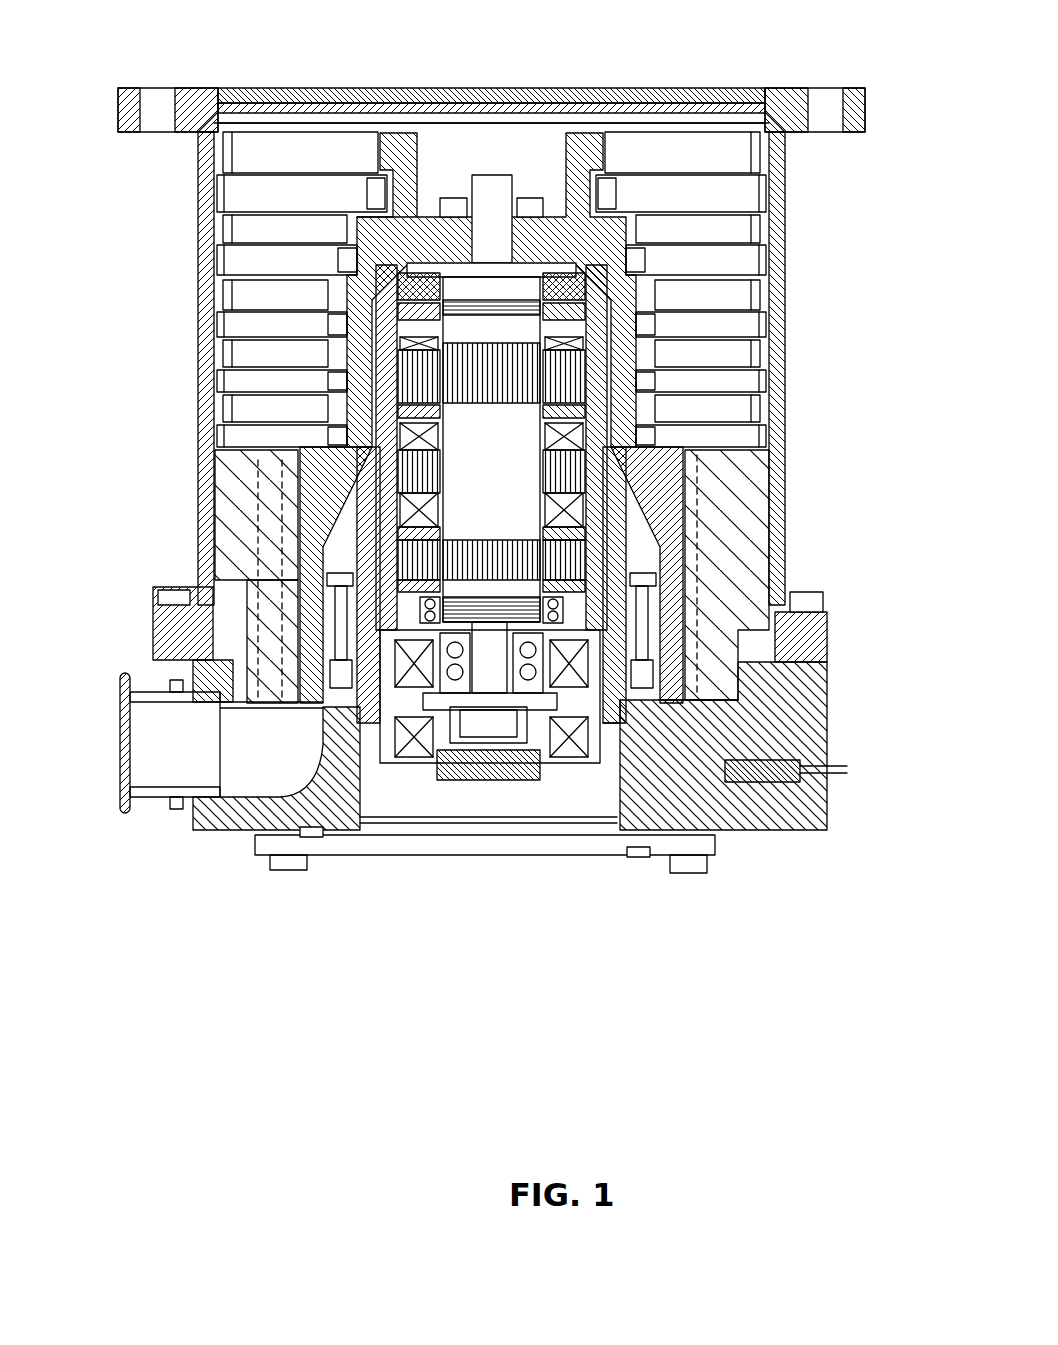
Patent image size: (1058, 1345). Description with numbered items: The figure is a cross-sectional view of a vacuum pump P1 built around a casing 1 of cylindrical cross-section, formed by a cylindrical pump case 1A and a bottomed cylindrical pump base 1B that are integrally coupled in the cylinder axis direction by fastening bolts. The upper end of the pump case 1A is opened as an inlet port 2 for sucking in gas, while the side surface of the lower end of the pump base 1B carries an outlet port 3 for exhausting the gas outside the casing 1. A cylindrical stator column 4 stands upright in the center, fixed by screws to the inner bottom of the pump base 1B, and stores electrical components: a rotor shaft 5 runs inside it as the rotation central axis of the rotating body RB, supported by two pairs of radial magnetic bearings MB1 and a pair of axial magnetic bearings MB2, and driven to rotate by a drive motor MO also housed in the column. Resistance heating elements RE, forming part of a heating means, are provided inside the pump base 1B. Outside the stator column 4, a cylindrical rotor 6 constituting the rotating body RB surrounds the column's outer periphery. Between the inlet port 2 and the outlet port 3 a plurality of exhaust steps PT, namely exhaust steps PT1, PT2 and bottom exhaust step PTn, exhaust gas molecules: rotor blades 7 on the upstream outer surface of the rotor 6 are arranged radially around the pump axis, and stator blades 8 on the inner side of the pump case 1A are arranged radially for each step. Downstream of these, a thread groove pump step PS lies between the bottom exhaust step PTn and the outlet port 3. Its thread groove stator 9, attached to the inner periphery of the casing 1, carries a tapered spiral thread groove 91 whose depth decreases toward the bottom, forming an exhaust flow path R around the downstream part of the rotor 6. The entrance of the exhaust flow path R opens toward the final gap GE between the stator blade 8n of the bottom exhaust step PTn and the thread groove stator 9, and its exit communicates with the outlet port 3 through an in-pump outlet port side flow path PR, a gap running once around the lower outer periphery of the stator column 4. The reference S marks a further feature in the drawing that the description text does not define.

The vacuum pump P1 is at (893, 56).
The casing 1 is at (504, 720).
The pump case 1A is at (790, 568).
The pump base 1B is at (835, 680).
The inlet port 2 is at (300, 90).
The outlet port 3 is at (118, 738).
The stator column 4 is at (531, 418).
The rotor shaft 5 is at (497, 176).
The rotor 6 is at (427, 218).
The rotor blades 7 is at (745, 152).
The stator blades 8 is at (755, 198).
The stator blade 8n is at (760, 438).
The thread groove stator 9 is at (785, 540).
The thread groove 91 is at (737, 575).
The exhaust steps PT is at (221, 289).
The exhaust step PT1 is at (217, 172).
The exhaust step PT2 is at (217, 238).
The bottom exhaust step PTn is at (226, 406).
The thread groove pump step PS is at (225, 576).
The radial magnetic bearings MB1 is at (454, 411).
The axial magnetic bearings MB2 is at (576, 797).
The drive motor MO is at (491, 582).
The final gap GE is at (790, 490).
The rotating body RB is at (693, 512).
The exhaust flow path R is at (686, 719).
The in-pump outlet port side flow path PR is at (700, 712).
The resistance heating elements RE is at (760, 768).
The space S is at (255, 793).